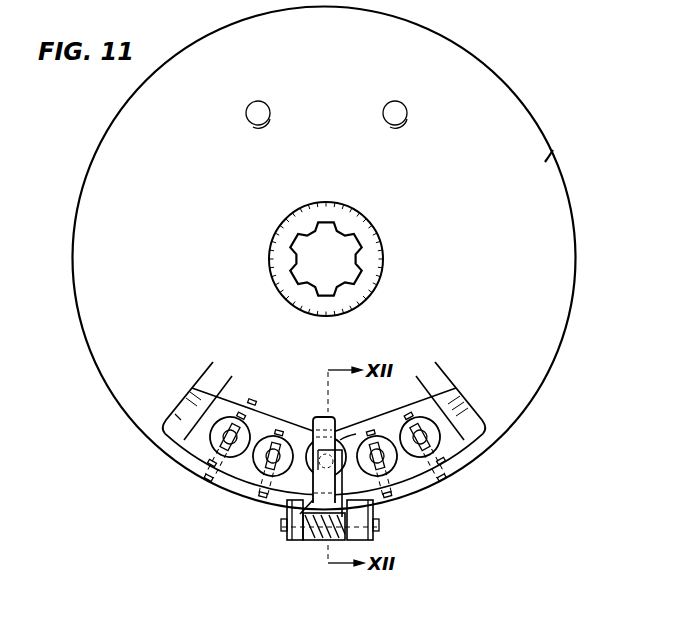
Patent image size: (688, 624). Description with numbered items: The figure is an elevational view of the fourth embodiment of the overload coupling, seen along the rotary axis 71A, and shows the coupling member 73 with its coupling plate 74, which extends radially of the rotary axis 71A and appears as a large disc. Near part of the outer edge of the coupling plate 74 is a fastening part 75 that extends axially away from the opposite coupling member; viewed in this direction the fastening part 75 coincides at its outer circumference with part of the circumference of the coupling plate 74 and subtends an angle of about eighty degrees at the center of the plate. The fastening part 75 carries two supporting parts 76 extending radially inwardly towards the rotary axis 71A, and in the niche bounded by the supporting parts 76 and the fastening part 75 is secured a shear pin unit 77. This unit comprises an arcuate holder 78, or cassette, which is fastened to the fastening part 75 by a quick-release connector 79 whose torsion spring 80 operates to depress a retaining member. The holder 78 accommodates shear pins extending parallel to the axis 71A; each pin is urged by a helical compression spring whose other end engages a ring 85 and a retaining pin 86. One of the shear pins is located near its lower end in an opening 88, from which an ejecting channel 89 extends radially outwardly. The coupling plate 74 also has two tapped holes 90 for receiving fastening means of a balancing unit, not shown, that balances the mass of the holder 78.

The coupling member 73 is at (488, 69).
The coupling plate 74 is at (538, 172).
The tapped holes 90 is at (384, 114).
The rotary axis 71A is at (327, 259).
The fastening part 75 is at (255, 498).
The supporting parts 76 is at (200, 384).
The shear pin unit 77 is at (355, 432).
The holder 78 is at (222, 402).
The quick-release connector 79 is at (308, 420).
The torsion spring 80 is at (356, 500).
The ring 85 is at (262, 432).
The retaining pin 86 is at (447, 464).
The opening 88 is at (173, 413).
The ejecting channel 89 is at (199, 484).